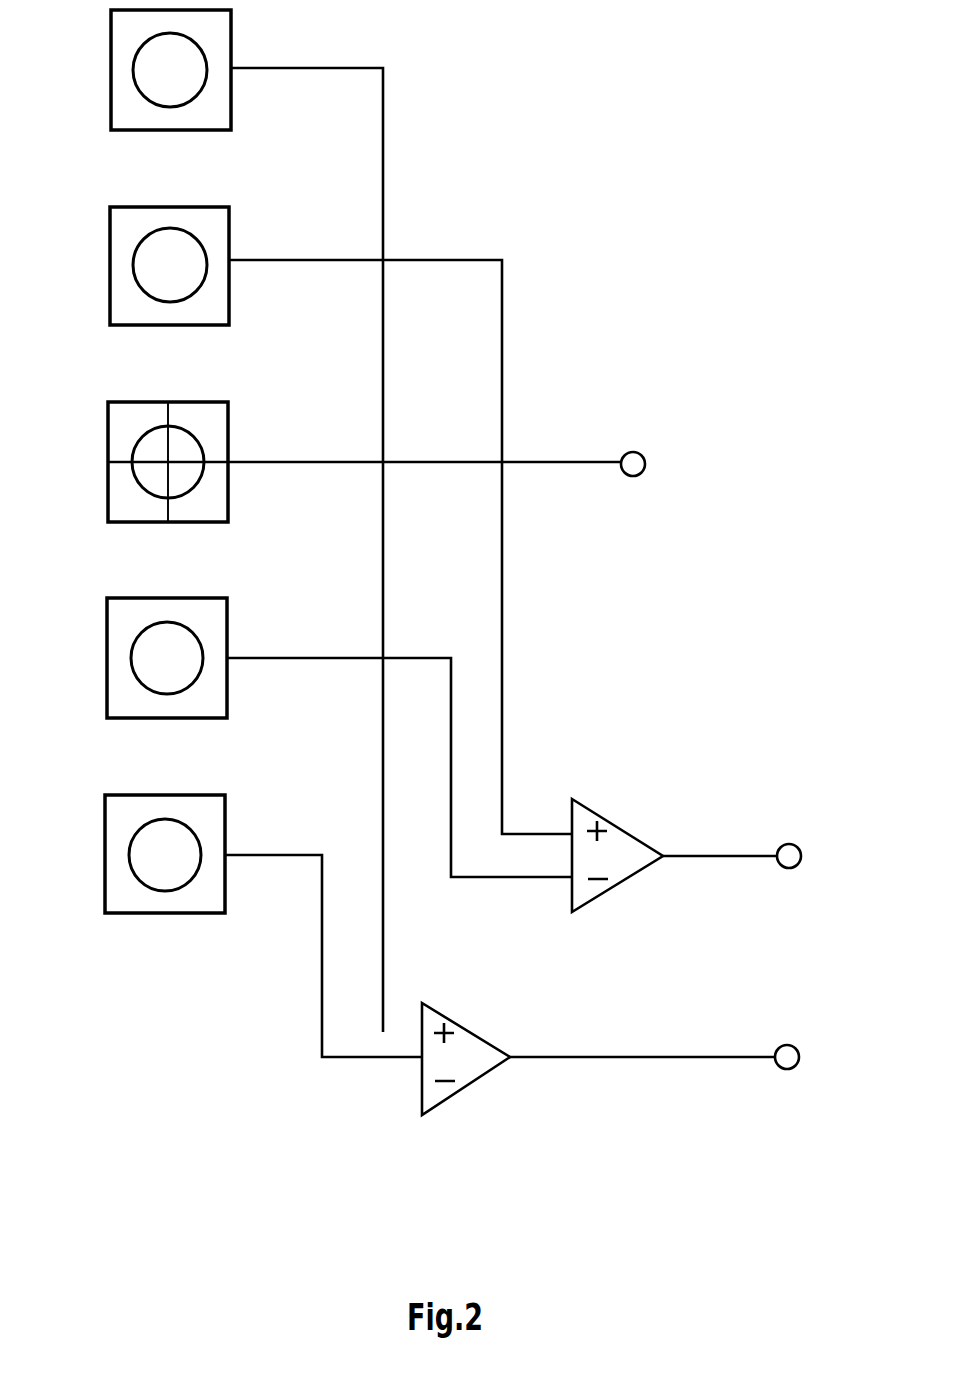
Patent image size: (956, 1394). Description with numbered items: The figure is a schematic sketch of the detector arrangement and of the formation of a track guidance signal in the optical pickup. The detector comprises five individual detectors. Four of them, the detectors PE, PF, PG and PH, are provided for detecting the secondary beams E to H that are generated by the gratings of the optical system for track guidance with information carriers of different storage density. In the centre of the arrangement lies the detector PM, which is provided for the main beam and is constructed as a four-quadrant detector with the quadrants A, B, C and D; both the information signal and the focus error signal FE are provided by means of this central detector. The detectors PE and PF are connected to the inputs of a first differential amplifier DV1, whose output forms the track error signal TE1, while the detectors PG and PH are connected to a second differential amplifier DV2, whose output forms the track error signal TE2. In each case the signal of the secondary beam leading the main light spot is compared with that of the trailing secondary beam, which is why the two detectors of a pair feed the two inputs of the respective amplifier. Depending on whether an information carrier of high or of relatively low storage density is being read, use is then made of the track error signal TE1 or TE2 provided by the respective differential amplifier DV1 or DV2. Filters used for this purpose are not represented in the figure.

The detector PG is at (217, 521).
The detector PE is at (312, 520).
The detector PM is at (169, 439).
The quadrant of four-quadrant detector A is at (112, 432).
The quadrant of four-quadrant detector B is at (217, 432).
The quadrant of four-quadrant detector C is at (217, 492).
The quadrant of four-quadrant detector D is at (112, 492).
The detector PF is at (307, 737).
The detector PH is at (232, 926).
The focus error signal FE is at (403, 470).
The differential amplifier DV1 is at (629, 849).
The differential amplifier DV2 is at (478, 1053).
The track error signal TE1 is at (766, 853).
The track error signal TE2 is at (690, 1056).